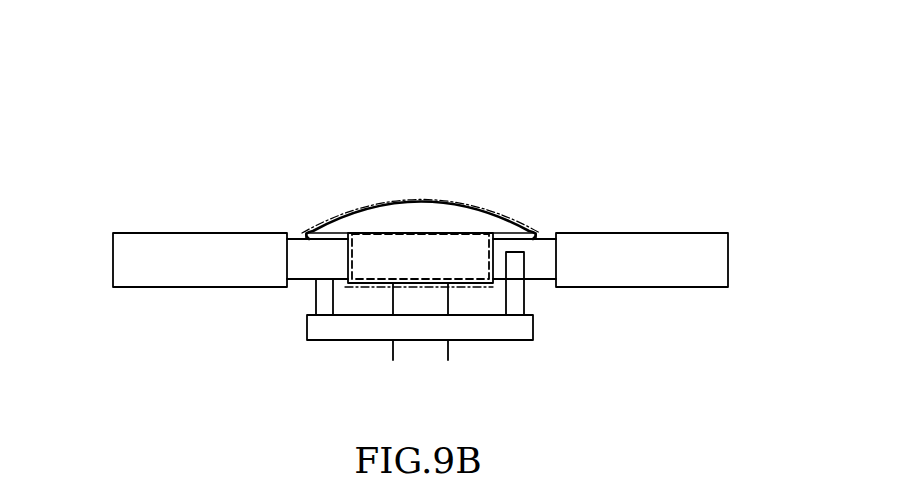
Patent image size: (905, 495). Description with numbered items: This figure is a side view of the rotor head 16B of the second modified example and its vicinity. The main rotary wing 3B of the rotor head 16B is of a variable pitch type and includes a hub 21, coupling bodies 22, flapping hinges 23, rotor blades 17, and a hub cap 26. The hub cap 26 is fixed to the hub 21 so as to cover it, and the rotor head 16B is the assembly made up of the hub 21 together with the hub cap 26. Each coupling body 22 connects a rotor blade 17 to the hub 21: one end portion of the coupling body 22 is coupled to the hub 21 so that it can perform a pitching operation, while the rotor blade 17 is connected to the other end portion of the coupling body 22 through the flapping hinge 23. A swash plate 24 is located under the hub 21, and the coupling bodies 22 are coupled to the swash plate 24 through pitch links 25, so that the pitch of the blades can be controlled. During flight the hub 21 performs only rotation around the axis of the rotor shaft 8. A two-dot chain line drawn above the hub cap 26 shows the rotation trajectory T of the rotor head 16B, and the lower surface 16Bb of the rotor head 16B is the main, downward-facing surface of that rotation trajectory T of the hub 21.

The main rotary wing 3B is at (284, 111).
The rotation trajectory T is at (363, 203).
The rotor head 16B is at (421, 146).
The hub 21 is at (387, 222).
The hub cap 26 is at (456, 203).
The coupling body 22 is at (327, 250).
The flapping hinge 23 is at (288, 248).
The rotor blade 17 is at (127, 270).
The pitch link 25 is at (322, 297).
The swash plate 24 is at (518, 343).
The rotor shaft 8 is at (393, 347).
The lower surface 16Bb is at (478, 288).